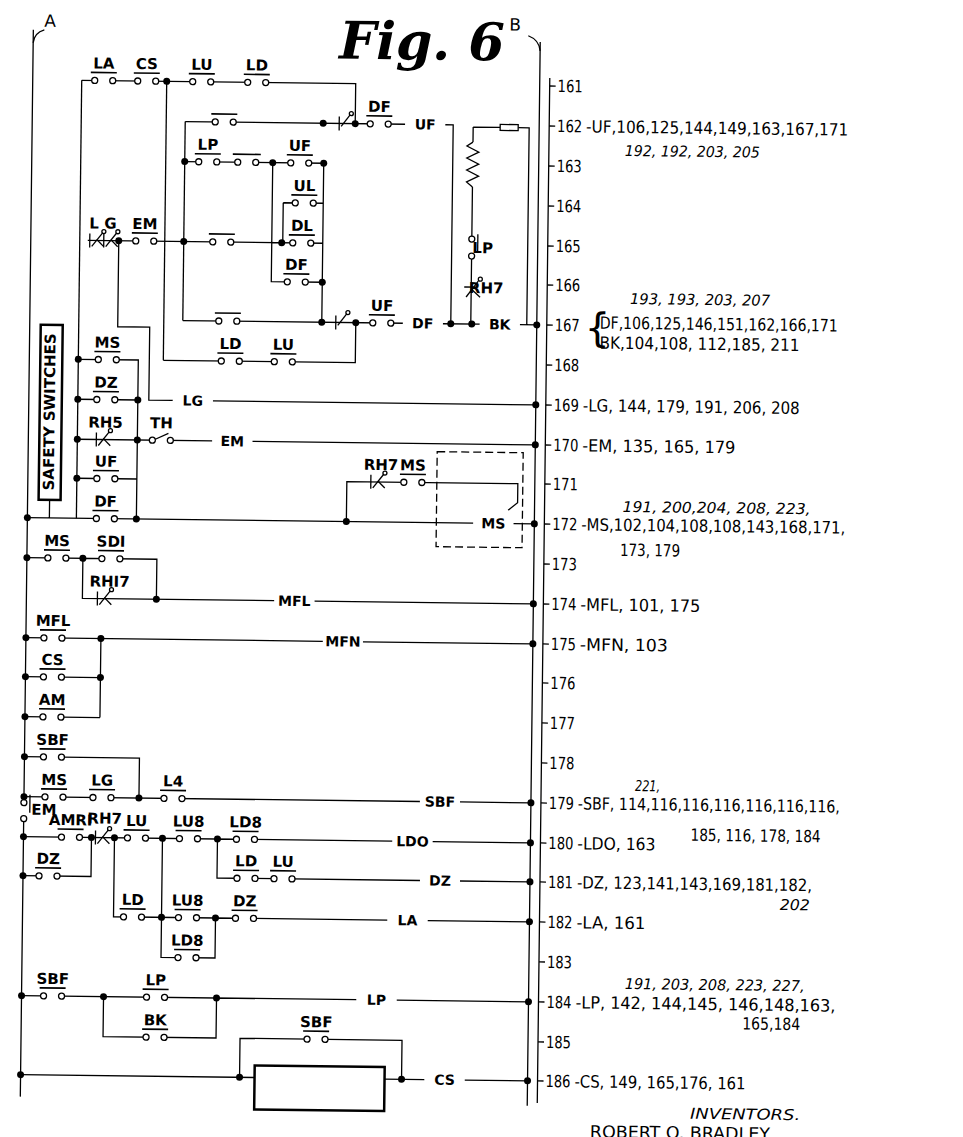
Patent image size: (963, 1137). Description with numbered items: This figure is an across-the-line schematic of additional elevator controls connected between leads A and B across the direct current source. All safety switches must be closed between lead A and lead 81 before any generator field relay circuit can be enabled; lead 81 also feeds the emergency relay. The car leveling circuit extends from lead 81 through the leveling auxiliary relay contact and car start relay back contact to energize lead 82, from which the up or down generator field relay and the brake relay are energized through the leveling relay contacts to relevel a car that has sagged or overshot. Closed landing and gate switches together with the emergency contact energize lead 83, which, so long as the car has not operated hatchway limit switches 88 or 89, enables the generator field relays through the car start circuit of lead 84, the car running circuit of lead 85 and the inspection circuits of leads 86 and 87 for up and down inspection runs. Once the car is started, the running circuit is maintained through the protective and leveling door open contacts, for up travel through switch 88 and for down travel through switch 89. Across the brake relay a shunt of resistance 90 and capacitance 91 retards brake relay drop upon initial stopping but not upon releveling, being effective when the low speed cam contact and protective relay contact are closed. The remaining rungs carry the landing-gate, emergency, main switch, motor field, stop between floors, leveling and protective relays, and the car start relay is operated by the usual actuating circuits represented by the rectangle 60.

The car starting circuits 60 is at (288, 1111).
The lead 81 is at (77, 314).
The lead 82 is at (161, 160).
The lead 83 is at (180, 200).
The lead 84 is at (205, 246).
The lead 85 is at (244, 166).
The lead 86 is at (247, 122).
The lead 87 is at (262, 321).
The hatchway limit switch 88 is at (336, 130).
The hatchway limit switch 89 is at (340, 312).
The resistance 90 is at (473, 160).
The capacitance 91 is at (501, 121).